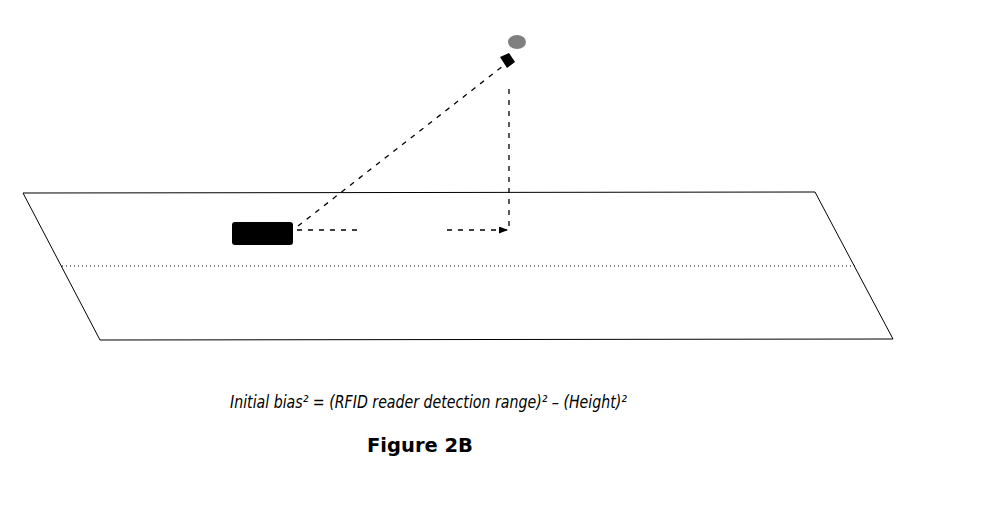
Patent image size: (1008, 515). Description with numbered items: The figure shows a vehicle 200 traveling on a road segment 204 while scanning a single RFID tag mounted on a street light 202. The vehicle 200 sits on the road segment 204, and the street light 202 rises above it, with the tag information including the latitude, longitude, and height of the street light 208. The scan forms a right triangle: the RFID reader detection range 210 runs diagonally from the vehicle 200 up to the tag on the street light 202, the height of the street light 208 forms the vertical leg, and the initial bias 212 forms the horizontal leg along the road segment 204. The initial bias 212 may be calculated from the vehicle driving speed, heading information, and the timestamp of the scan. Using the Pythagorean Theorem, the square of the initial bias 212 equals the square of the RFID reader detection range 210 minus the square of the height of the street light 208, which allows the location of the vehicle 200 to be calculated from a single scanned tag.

The vehicle 200 is at (270, 226).
The street light 202 is at (527, 43).
The road segment 204 is at (808, 207).
The height of the street light 208 is at (525, 143).
The RFID reader detection range 210 is at (398, 113).
The initial bias 212 is at (428, 250).